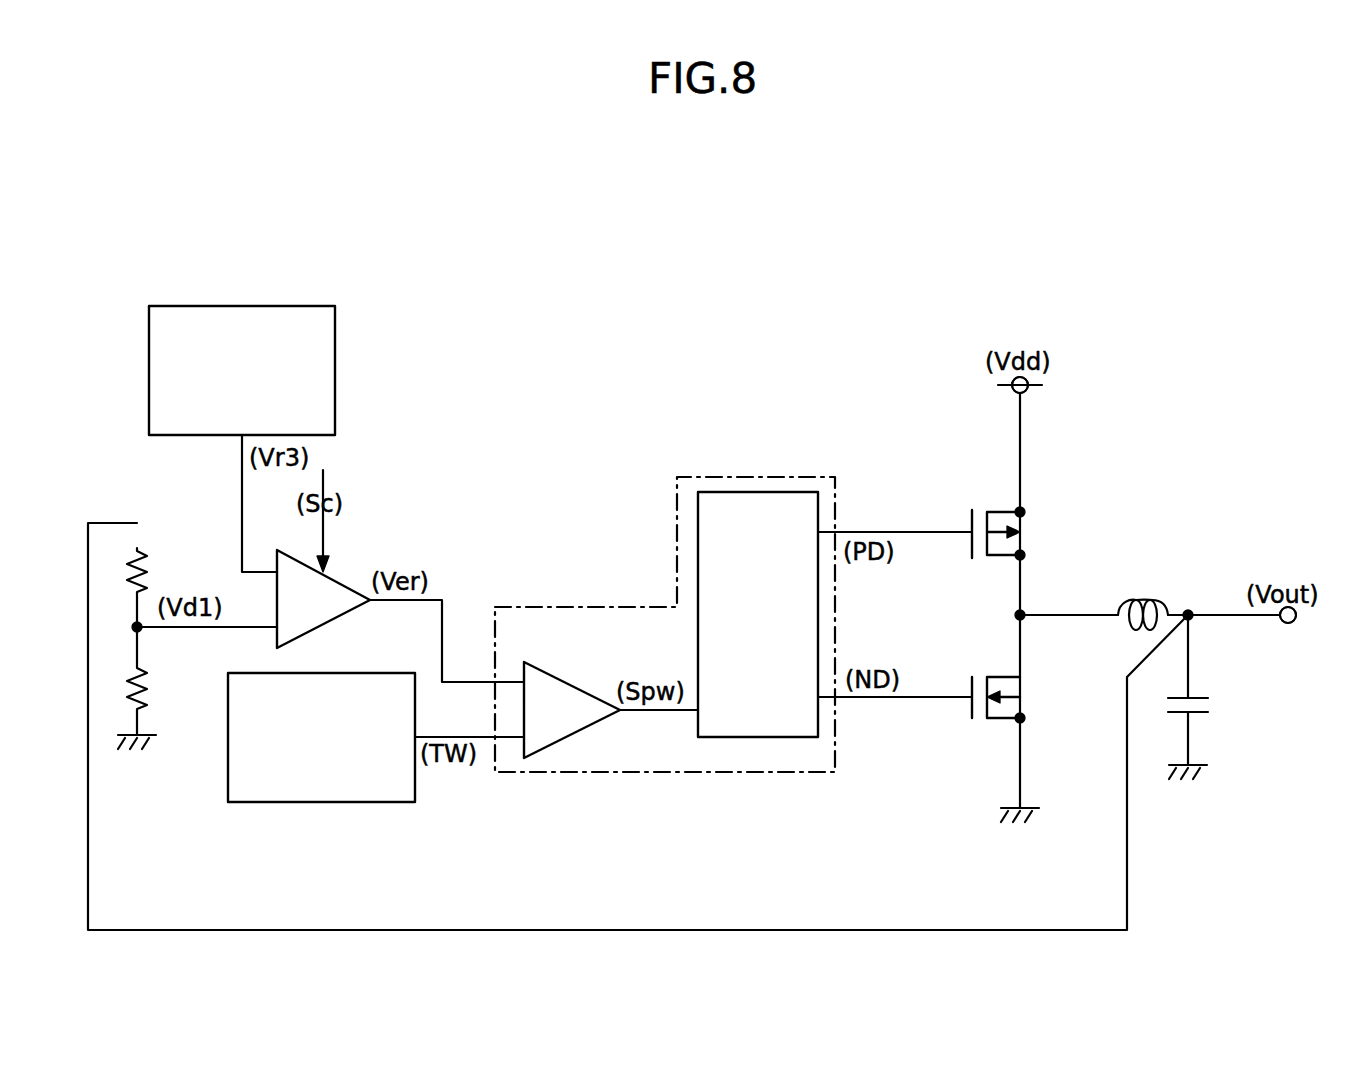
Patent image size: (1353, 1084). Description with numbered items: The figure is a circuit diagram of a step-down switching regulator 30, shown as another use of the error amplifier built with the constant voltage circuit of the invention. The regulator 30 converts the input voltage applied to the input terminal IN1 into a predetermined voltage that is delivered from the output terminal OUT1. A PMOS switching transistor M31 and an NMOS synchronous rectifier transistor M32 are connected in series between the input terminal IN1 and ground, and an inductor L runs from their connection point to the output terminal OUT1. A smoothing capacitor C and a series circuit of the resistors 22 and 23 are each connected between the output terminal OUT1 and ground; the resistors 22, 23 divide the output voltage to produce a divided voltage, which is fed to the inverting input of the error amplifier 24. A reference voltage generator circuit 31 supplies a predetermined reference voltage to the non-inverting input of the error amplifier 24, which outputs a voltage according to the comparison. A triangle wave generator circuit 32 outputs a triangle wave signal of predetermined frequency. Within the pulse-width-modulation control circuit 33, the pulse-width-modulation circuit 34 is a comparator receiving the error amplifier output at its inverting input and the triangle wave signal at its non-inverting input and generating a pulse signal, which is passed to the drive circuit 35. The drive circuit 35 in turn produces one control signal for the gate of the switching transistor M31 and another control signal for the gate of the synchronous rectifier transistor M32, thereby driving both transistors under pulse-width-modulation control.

The resistor 22 is at (161, 584).
The resistor 23 is at (157, 688).
The error amplifier 24 is at (358, 611).
The step-down switching regulator 30 is at (900, 242).
The reference voltage generator circuit 31 is at (337, 369).
The triangle wave generator circuit 32 is at (320, 803).
The PWM control circuit 33 is at (576, 590).
The PWM circuit 34 is at (580, 733).
The drive circuit 35 is at (757, 492).
The switching transistor M31 is at (991, 522).
The synchronous rectifier transistor M32 is at (990, 715).
The inductor L is at (1143, 598).
The capacitor C is at (1173, 697).
The input terminal IN1 is at (1026, 393).
The output terminal OUT1 is at (1287, 624).